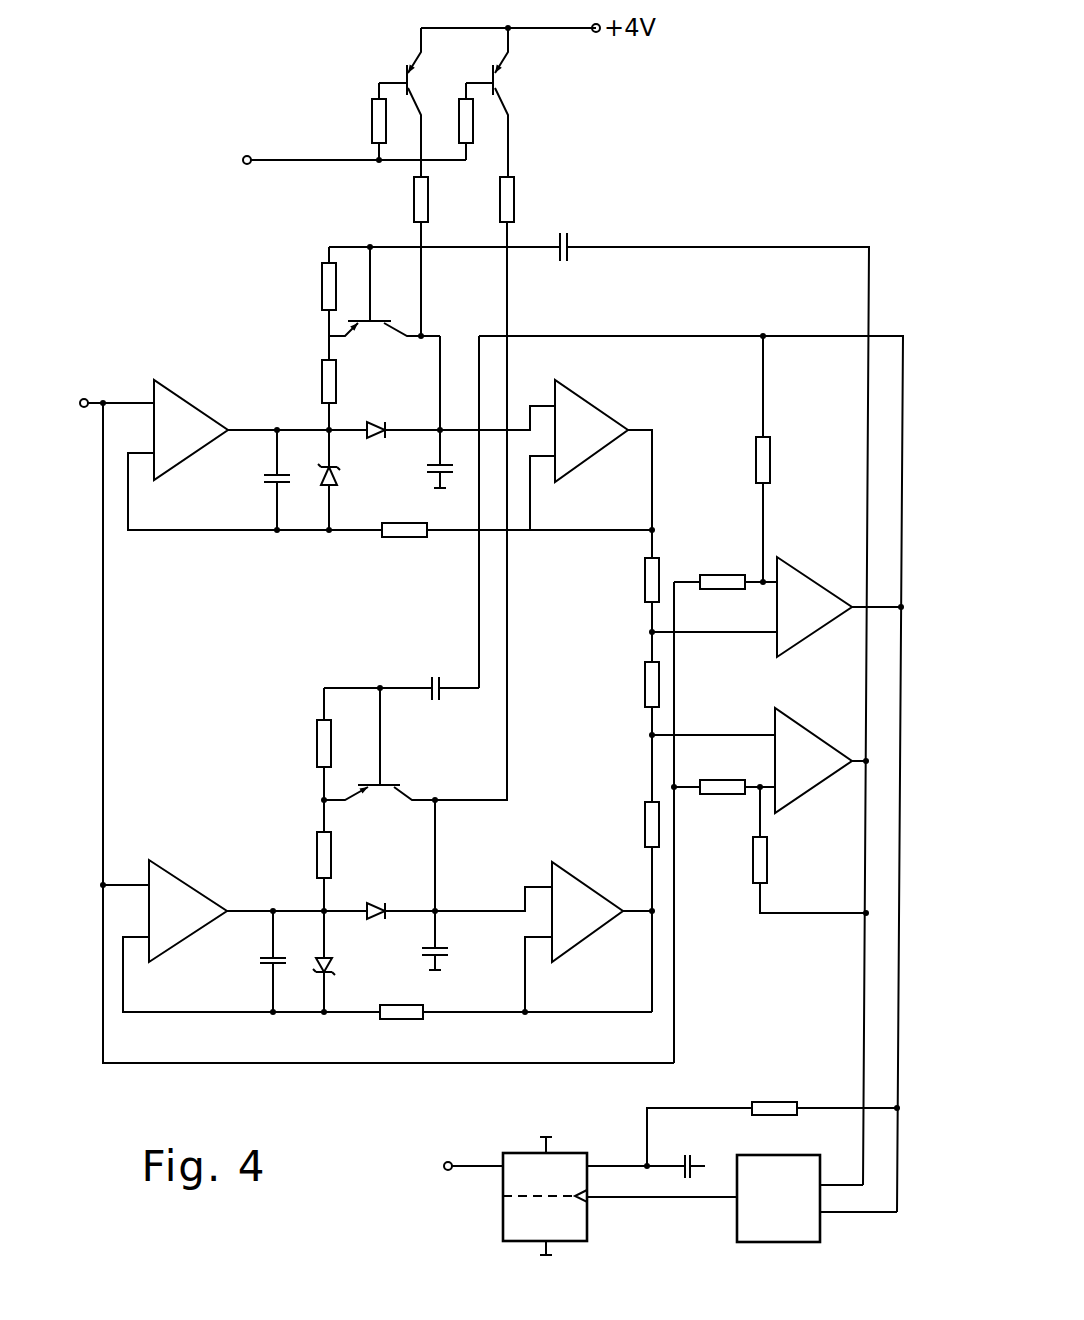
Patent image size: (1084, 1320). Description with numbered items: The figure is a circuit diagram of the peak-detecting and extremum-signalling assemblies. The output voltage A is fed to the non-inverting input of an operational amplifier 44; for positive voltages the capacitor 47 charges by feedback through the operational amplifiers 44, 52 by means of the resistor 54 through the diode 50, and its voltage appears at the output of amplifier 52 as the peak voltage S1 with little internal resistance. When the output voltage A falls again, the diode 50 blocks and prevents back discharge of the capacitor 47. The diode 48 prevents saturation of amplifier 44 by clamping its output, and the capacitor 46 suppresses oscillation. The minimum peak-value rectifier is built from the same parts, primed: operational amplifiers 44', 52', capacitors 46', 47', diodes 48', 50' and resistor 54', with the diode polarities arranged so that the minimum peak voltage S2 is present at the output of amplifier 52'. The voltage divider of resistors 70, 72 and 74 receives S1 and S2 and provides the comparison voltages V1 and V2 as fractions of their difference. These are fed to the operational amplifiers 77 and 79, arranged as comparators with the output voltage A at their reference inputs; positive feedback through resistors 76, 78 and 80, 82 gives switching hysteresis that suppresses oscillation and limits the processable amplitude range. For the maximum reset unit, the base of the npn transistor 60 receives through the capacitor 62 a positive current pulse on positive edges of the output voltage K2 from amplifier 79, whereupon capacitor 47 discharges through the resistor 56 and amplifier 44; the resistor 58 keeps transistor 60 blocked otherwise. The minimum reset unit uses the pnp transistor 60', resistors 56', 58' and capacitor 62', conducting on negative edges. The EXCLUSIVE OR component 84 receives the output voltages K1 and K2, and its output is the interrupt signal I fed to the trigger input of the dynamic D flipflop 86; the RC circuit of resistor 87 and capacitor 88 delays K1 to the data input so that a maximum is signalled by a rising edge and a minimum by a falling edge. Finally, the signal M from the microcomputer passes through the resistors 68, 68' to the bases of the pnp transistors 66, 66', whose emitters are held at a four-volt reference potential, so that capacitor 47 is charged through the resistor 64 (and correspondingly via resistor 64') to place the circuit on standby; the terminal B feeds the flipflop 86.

The operational amplifier 44 is at (255, 447).
The operational amplifier 44' is at (240, 919).
The capacitor 46 is at (256, 480).
The capacitor 46' is at (247, 961).
The capacitor 47 is at (418, 412).
The capacitor 47' is at (461, 895).
The diode 48 is at (347, 480).
The diode 48' is at (350, 961).
The diode 50 is at (461, 410).
The diode 50' is at (459, 887).
The operational amplifier 52 is at (591, 459).
The operational amplifier 52' is at (588, 937).
The resistor 54 is at (509, 549).
The resistor 54' is at (516, 1030).
The resistor 56 is at (307, 383).
The resistor 56' is at (296, 855).
The resistor 58 is at (308, 291).
The resistor 58' is at (296, 744).
The npn transistor 60 is at (384, 293).
The pnp transistor 60' is at (381, 745).
The capacitor 62 is at (599, 695).
The capacitor 62' is at (401, 670).
The resistor 64 is at (399, 256).
The resistor 64' is at (502, 480).
The pnp transistor 66 is at (396, 100).
The pnp transistor 66' is at (527, 102).
The resistor 68 is at (369, 121).
The resistor 68' is at (459, 112).
The resistor 70 is at (645, 582).
The resistor 72 is at (645, 692).
The resistor 74 is at (645, 832).
The resistor 76 is at (720, 574).
The operational amplifier 77 is at (810, 578).
The resistor 78 is at (771, 462).
The operational amplifier 79 is at (816, 798).
The resistor 80 is at (714, 796).
The resistor 82 is at (767, 866).
The EXCLUSIVE OR component 84 is at (826, 1242).
The dynamic D flipflop 86 is at (502, 1236).
The resistor 87 is at (772, 1100).
The capacitor 88 is at (692, 1158).
The output voltage A is at (90, 399).
The input terminal B is at (444, 1170).
The signal M is at (243, 158).
The interrupt signal I is at (652, 1200).
The peak voltage S1 is at (656, 460).
The minimum peak voltage S2 is at (650, 886).
The comparison voltage V1 is at (650, 632).
The comparison voltage V2 is at (650, 735).
The output voltage K1 is at (900, 604).
The output voltage K2 is at (868, 760).